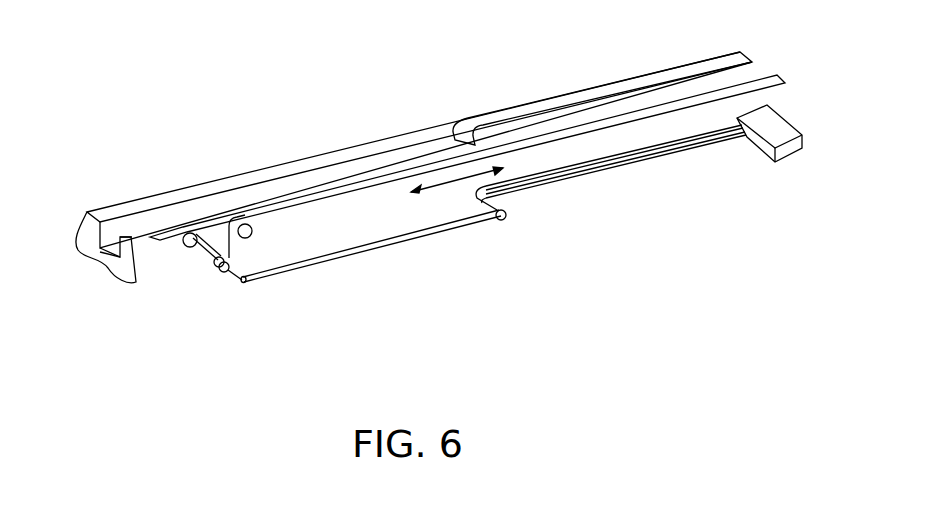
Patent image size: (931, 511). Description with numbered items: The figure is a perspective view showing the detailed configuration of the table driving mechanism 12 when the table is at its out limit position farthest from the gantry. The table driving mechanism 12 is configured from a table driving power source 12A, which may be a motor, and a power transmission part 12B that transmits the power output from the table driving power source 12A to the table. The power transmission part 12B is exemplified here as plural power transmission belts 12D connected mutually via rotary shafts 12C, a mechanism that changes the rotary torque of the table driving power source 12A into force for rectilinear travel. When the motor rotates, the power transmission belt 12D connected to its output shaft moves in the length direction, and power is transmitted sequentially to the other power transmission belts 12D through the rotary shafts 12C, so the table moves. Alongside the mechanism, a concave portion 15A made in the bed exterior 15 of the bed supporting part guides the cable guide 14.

The table driving mechanism 12 is at (584, 216).
The table driving power source 12A is at (761, 153).
The power transmission part 12B is at (457, 343).
The rotary shaft 12C is at (194, 248).
The power transmission belt 12D is at (290, 207).
The cable guide 14 is at (563, 98).
The bed exterior 15 is at (108, 210).
The concave portion 15A is at (185, 213).